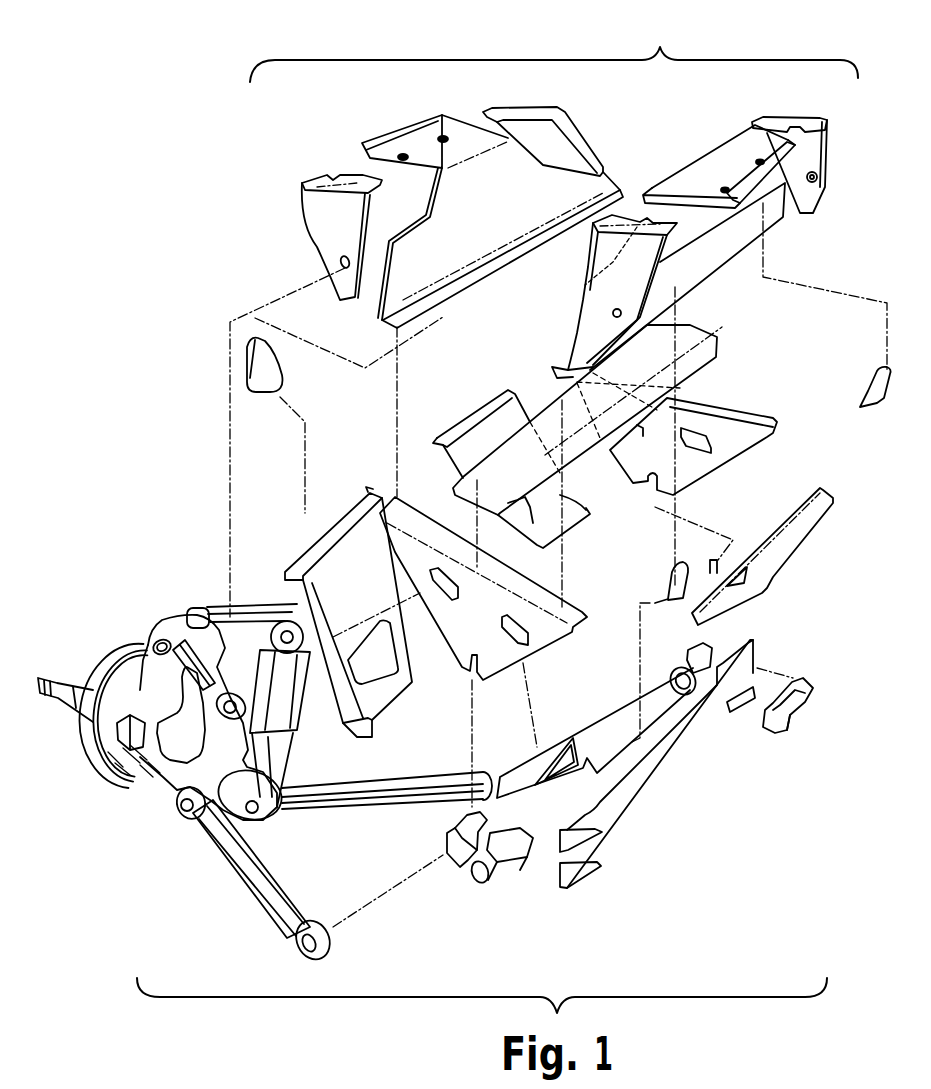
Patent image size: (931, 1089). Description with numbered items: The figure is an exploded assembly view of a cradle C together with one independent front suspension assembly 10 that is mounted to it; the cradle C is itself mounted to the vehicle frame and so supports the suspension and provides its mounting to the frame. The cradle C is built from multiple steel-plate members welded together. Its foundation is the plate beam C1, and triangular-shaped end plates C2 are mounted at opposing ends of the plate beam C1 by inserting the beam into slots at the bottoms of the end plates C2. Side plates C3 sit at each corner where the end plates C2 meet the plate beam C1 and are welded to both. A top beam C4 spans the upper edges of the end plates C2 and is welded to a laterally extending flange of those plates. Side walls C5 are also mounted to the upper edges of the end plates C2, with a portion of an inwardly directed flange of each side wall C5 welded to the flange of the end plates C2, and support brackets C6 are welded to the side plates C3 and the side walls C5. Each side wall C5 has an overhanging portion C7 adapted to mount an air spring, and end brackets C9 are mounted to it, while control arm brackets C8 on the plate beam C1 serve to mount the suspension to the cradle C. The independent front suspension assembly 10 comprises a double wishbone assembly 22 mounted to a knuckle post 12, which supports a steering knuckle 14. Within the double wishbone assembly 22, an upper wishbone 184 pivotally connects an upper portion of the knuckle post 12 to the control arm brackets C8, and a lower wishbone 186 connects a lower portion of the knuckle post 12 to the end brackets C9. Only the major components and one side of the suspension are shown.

The cradle C is at (554, 50).
The plate beam C1 is at (693, 767).
The end plates C2 is at (457, 643).
The side plates C3 is at (483, 422).
The top beam C4 is at (685, 333).
The side walls C5 is at (485, 238).
The support brackets C6 is at (270, 360).
The overhanging portion C7 is at (432, 149).
The control arm brackets C8 is at (318, 212).
The end brackets C9 is at (688, 650).
The independent front suspension assembly 10 is at (110, 596).
The knuckle post 12 is at (147, 753).
The steering knuckle 14 is at (108, 787).
The double wishbone assembly 22 is at (201, 866).
The upper wishbone 184 is at (215, 603).
The lower wishbone 186 is at (236, 886).